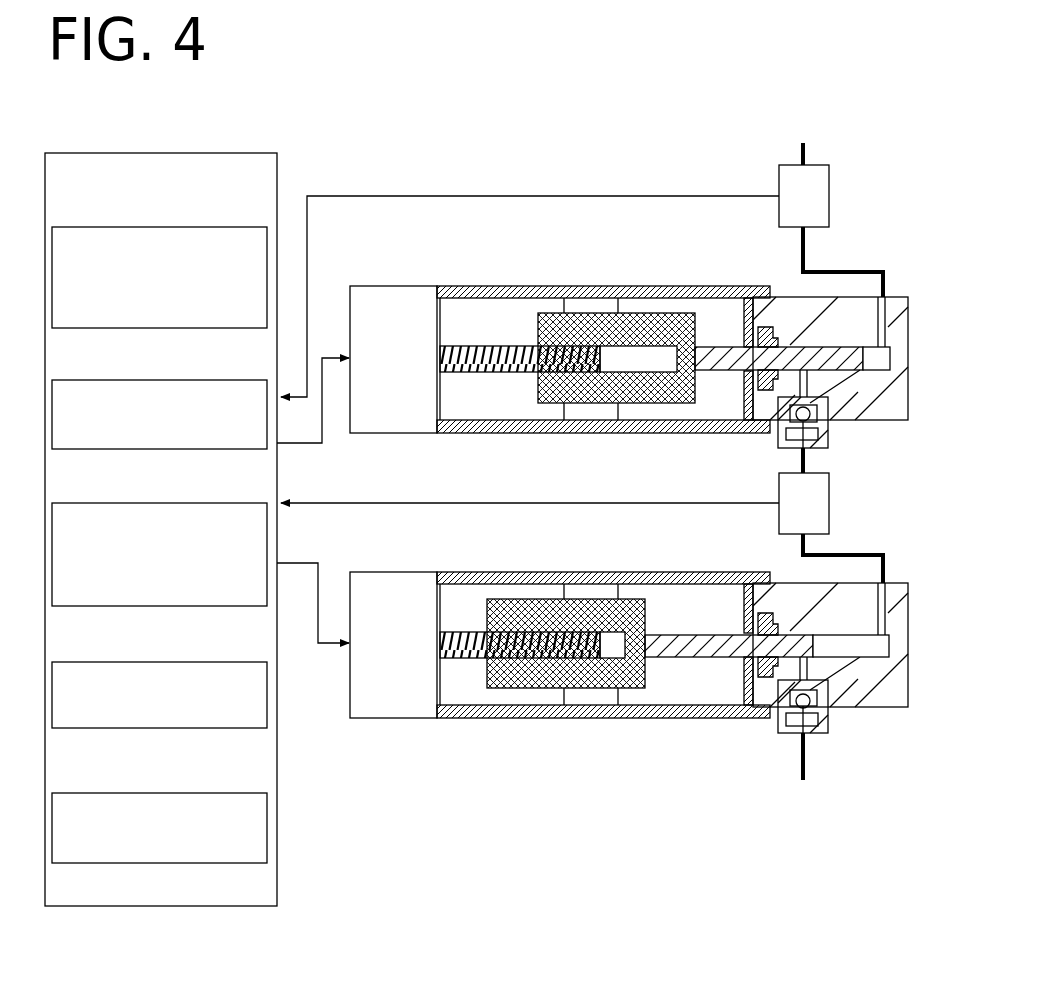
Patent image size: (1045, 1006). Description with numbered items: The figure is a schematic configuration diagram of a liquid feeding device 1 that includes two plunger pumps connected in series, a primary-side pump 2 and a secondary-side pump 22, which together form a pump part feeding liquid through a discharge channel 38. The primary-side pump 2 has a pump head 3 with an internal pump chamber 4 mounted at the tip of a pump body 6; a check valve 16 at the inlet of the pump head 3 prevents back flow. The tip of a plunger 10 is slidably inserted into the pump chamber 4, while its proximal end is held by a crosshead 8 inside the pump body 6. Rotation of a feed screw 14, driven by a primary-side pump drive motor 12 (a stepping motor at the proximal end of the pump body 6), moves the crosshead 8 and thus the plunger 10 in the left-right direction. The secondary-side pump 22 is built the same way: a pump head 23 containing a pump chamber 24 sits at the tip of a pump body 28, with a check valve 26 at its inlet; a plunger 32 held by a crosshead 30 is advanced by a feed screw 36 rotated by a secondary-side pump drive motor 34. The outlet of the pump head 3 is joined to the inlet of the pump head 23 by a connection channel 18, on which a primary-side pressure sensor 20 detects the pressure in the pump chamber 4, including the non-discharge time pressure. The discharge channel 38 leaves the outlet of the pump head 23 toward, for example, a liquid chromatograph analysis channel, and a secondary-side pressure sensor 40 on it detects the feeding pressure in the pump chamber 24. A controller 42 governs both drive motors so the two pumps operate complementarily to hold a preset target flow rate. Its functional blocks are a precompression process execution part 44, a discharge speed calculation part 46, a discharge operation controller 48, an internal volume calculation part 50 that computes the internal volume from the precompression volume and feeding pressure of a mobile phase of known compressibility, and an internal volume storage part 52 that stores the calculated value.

The liquid feeding device 1 is at (278, 118).
The primary-side pump 2 is at (600, 806).
The pump head 3 is at (888, 707).
The pump chamber 4 is at (843, 645).
The pump body 6 is at (465, 718).
The crosshead 8 is at (587, 690).
The plunger 10 is at (680, 650).
The primary-side pump drive motor 12 is at (380, 718).
The feed screw 14 is at (520, 658).
The check valve 16 is at (778, 733).
The connection channel 18 is at (884, 555).
The primary-side pressure sensor 20 is at (830, 503).
The secondary-side pump 22 is at (614, 470).
The pump head 23 is at (855, 420).
The pump chamber 24 is at (882, 370).
The check valve 26 is at (778, 447).
The pump body 28 is at (478, 286).
The crosshead 30 is at (645, 320).
The plunger 32 is at (719, 352).
The secondary-side pump drive motor 34 is at (406, 286).
The feed screw 36 is at (508, 346).
The discharge channel 38 is at (884, 270).
The secondary-side pressure sensor 40 is at (832, 177).
The controller 42 is at (122, 153).
The precompression process execution part 44 is at (107, 227).
The discharge speed calculation part 46 is at (104, 380).
The discharge operation controller 48 is at (104, 503).
The internal volume calculation part 50 is at (104, 662).
The internal volume storage part 52 is at (104, 793).